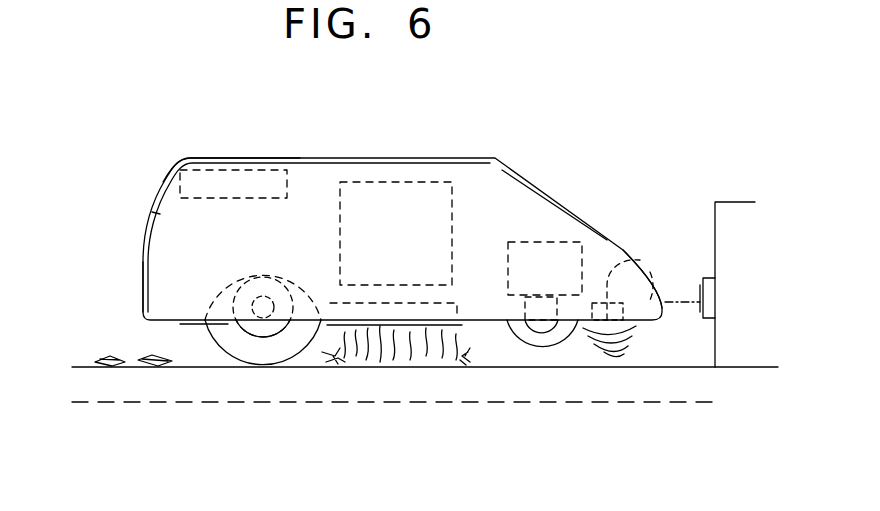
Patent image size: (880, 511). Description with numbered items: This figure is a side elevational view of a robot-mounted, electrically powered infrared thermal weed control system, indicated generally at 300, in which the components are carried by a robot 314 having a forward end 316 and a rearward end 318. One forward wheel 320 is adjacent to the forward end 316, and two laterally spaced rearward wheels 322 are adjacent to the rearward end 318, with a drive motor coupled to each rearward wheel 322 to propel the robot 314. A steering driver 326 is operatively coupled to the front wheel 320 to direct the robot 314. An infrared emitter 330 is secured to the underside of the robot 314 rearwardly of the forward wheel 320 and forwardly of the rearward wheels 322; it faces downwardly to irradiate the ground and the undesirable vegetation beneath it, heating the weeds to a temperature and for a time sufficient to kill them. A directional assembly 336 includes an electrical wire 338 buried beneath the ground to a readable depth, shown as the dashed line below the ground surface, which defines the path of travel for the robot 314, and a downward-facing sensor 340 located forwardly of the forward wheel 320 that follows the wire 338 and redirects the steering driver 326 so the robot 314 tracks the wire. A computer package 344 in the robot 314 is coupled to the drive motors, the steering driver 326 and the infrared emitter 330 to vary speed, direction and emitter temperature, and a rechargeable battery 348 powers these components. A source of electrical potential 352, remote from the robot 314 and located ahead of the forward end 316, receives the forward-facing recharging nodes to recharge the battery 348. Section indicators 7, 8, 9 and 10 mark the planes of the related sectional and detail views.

The vehicle 300 is at (516, 140).
The robot 314 is at (147, 217).
The forward end 316 is at (663, 308).
The rearward end 318 is at (140, 256).
The forward wheel 320 is at (538, 353).
The rearward wheels 322 is at (267, 347).
The steering driver 326 is at (540, 268).
The infrared emitter 330 is at (390, 327).
The directional assembly 336 is at (598, 364).
The electrical wire 338 is at (298, 403).
The sensor 340 is at (612, 278).
The computer package 344 is at (237, 182).
The rechargeable battery 348 is at (394, 225).
The source of electrical potential 352 is at (712, 293).
The section line 7- 7 is at (190, 95).
The section line 8- 8 is at (125, 159).
The section line 9- 9 is at (140, 382).
The section line 10- 10 is at (670, 142).